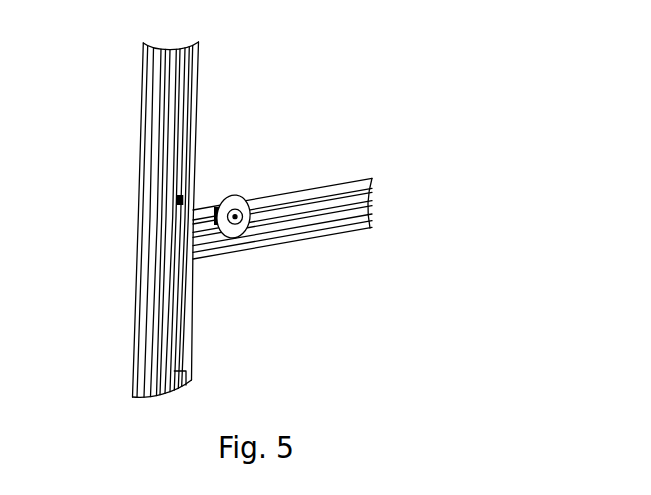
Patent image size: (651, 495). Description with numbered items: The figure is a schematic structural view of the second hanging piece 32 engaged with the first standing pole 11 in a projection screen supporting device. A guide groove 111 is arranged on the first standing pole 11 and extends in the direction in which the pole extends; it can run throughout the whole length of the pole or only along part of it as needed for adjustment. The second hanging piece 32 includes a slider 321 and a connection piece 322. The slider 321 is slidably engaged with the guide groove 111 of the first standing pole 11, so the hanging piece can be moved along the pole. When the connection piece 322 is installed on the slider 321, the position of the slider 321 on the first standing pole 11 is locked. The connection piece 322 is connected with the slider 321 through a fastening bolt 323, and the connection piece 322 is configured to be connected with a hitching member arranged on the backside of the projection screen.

The first standing pole 11 is at (150, 217).
The guide groove 111 is at (186, 143).
The second hanging piece 32 is at (322, 220).
The slider 321 is at (183, 183).
The connection piece 322 is at (243, 200).
The fastening bolt 323 is at (240, 220).